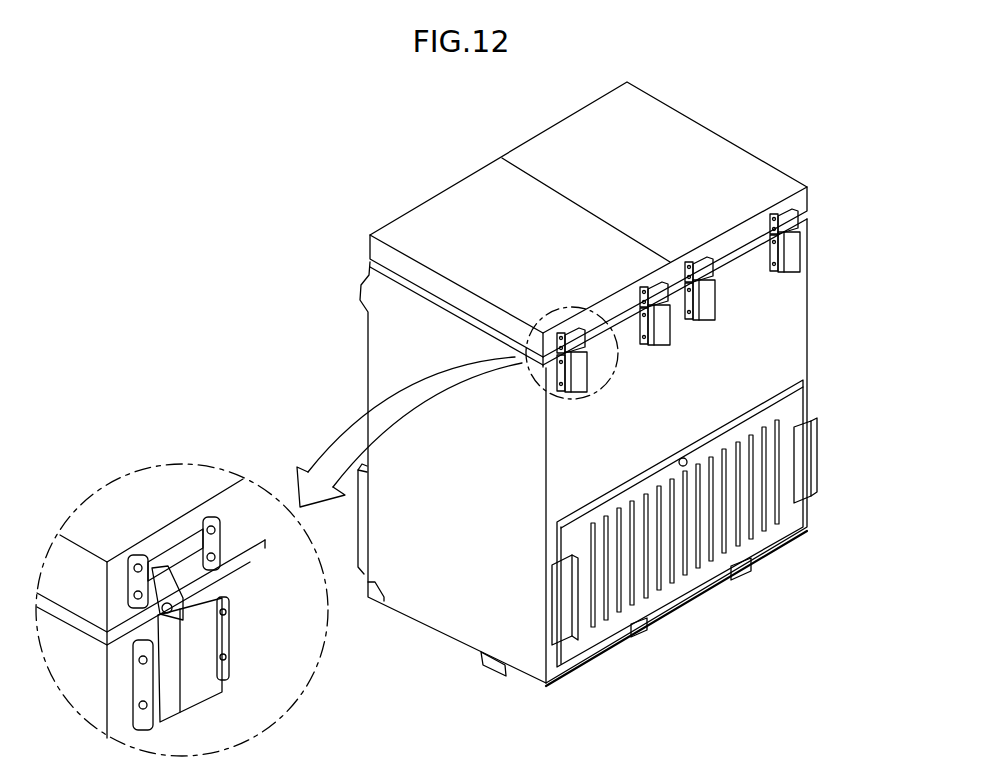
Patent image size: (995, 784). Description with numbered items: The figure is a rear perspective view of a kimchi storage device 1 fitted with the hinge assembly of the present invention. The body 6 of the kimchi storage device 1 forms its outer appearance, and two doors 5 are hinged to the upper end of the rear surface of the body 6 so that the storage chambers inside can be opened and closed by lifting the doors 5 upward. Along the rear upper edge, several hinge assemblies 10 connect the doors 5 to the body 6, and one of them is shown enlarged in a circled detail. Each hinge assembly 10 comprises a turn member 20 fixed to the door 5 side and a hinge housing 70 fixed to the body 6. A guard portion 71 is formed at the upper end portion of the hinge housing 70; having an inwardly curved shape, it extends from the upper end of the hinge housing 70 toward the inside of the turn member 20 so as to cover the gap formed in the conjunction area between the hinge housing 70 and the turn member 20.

The kimchi storage device 1 is at (348, 281).
The door 5 is at (727, 150).
The body 6 is at (377, 372).
The hinge assembly 10 is at (812, 233).
The turn member 20 is at (805, 207).
The hinge housing 70 is at (793, 257).
The guard portion 71 is at (163, 612).